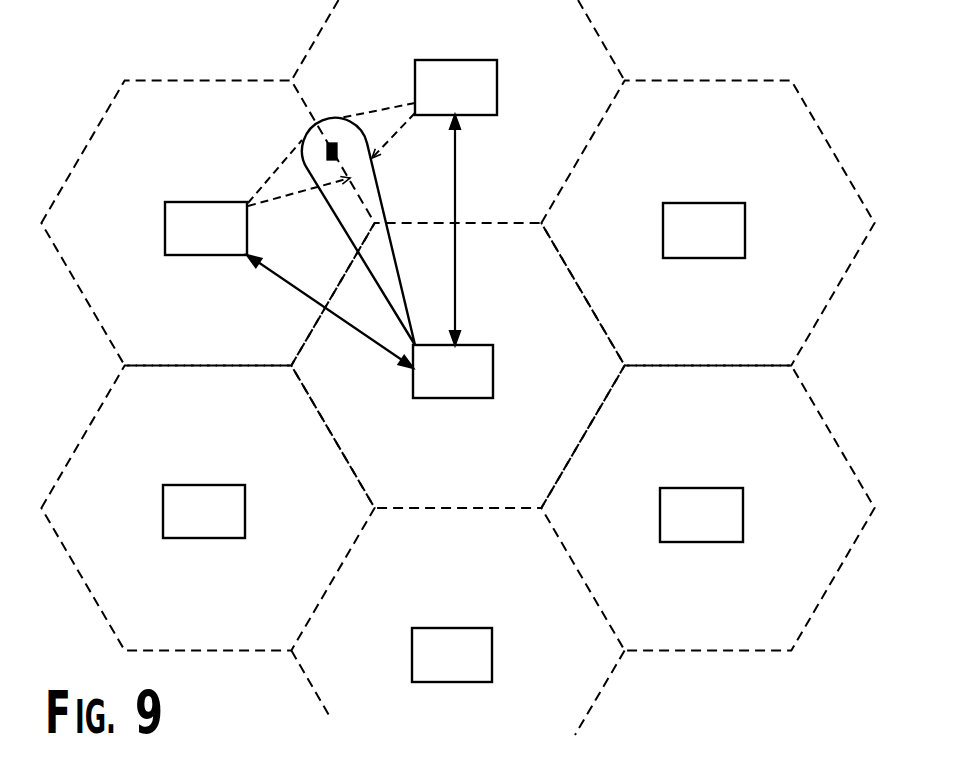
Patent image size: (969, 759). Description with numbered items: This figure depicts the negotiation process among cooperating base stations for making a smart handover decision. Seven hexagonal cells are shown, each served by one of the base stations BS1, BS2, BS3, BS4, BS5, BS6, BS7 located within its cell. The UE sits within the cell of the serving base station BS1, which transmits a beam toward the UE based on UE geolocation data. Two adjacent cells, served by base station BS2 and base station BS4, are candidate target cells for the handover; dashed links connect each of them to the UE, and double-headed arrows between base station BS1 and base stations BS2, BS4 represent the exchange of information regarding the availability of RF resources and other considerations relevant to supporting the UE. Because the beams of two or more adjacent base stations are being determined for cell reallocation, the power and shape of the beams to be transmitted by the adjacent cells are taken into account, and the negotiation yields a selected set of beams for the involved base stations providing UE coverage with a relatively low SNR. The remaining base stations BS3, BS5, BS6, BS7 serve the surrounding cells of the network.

The base station BS1 is at (483, 376).
The base station BS2 is at (199, 255).
The base station BS3 is at (719, 542).
The base station BS4 is at (470, 68).
The base station BS5 is at (470, 682).
The base station BS6 is at (719, 257).
The base station BS7 is at (222, 539).
The element UE is at (337, 151).